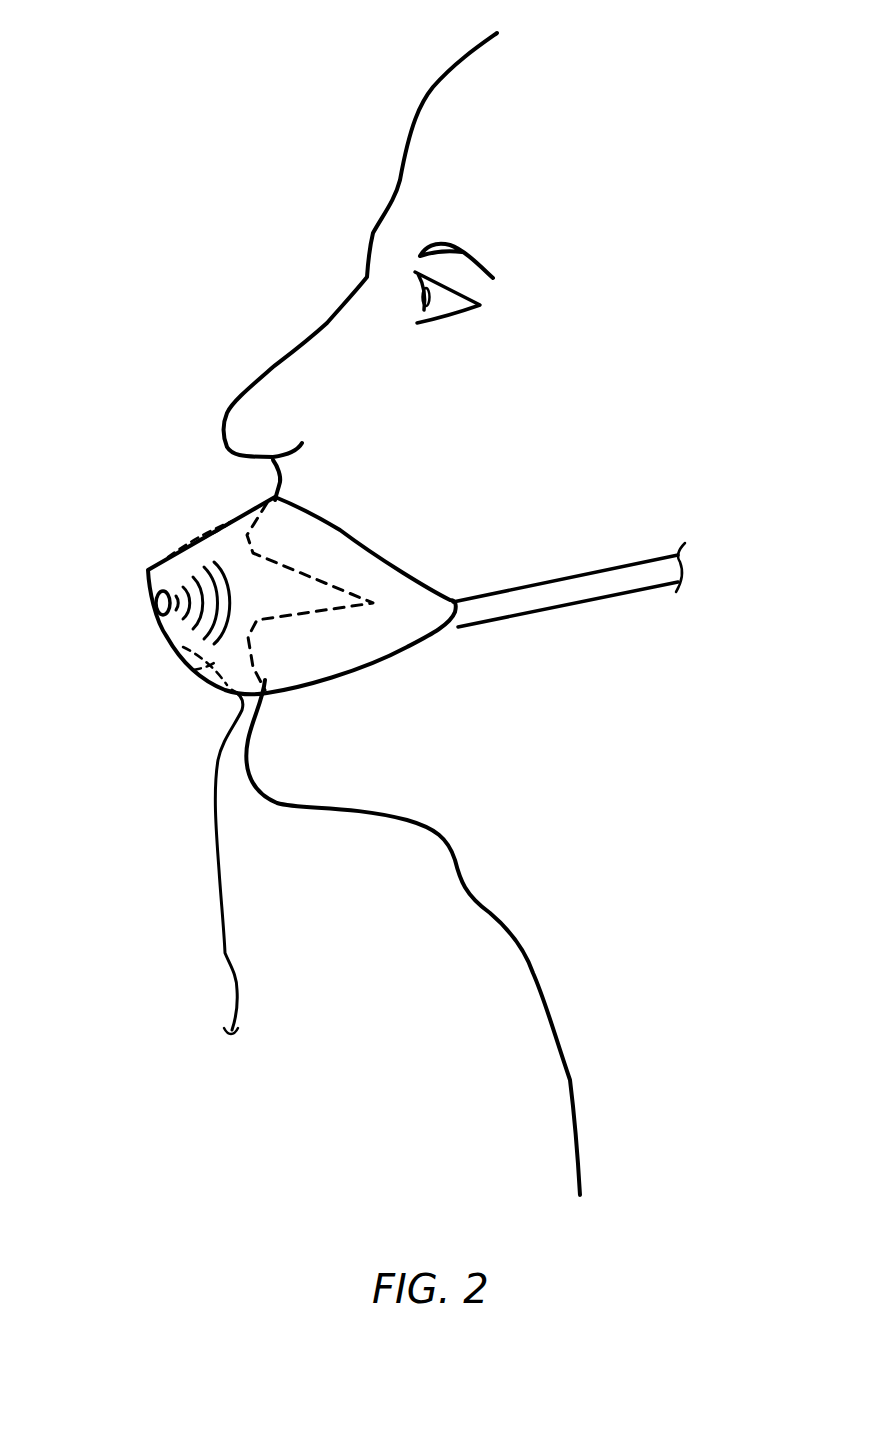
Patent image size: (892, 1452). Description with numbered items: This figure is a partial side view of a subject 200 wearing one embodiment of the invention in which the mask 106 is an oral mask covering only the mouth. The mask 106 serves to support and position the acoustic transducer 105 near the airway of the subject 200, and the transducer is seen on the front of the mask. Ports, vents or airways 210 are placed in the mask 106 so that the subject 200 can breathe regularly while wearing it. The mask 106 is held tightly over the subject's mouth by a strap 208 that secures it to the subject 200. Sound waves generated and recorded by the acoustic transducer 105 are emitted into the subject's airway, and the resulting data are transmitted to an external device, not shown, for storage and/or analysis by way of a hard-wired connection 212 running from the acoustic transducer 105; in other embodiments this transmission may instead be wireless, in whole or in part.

The subject 200 is at (433, 147).
The mask 106 is at (368, 558).
The acoustic transducer 105 is at (155, 605).
The strap 208 is at (525, 600).
The ports, vents or airways 210 is at (195, 540).
The hard-wired connection 212 is at (224, 953).